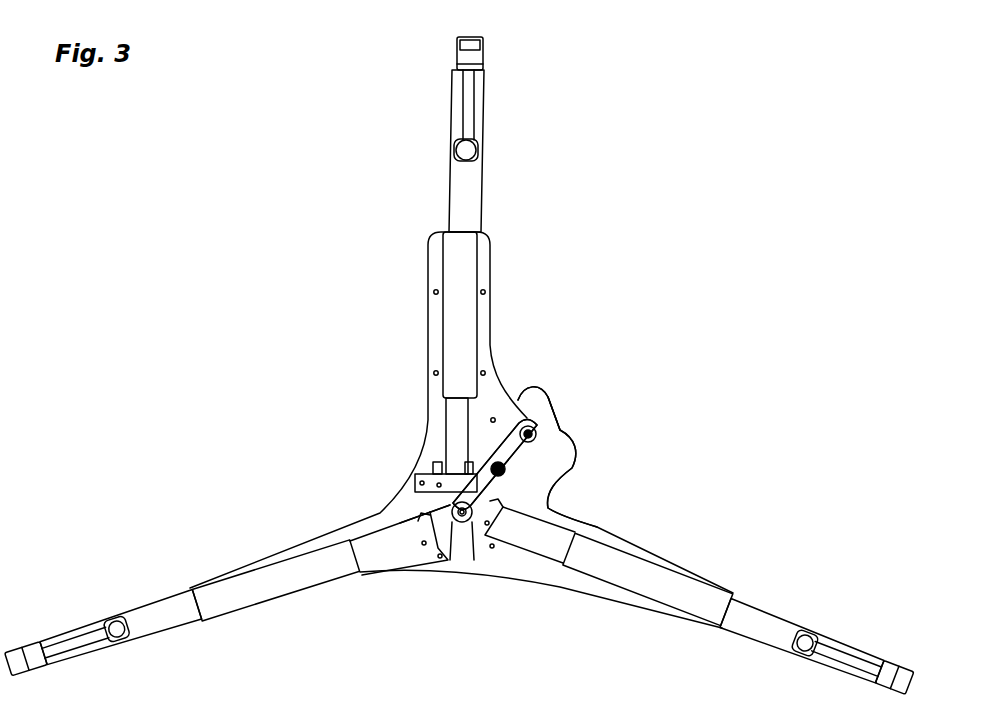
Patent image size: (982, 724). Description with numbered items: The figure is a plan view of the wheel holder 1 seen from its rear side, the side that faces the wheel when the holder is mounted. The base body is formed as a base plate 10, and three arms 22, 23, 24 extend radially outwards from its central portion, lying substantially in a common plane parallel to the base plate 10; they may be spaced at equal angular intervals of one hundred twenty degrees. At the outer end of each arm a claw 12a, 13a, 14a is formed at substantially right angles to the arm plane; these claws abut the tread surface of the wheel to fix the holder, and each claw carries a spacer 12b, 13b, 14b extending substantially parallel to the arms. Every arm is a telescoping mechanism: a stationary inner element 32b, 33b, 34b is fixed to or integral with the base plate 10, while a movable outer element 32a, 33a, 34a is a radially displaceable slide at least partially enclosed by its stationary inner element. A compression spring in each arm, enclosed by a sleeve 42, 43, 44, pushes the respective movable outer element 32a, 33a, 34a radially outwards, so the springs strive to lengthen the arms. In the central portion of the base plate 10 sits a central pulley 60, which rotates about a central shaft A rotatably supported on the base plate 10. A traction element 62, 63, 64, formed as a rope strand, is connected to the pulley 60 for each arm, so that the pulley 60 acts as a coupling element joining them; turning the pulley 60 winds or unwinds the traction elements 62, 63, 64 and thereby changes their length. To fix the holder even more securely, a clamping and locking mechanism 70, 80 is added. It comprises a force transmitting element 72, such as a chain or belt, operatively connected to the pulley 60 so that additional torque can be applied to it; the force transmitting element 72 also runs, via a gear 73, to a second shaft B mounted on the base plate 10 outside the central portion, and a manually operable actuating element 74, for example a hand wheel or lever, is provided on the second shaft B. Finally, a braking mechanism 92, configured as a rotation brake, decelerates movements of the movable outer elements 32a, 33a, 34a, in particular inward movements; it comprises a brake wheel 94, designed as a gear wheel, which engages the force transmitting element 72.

The wheel holder 1 is at (776, 167).
The base plate 10 is at (486, 326).
The claw 12a is at (492, 58).
The spacer 12b is at (457, 150).
The claw 13a is at (873, 642).
The spacer 13b is at (806, 638).
The claw 14a is at (22, 630).
The spacer 14b is at (115, 625).
The arm 22 is at (508, 158).
The arm 23 is at (766, 595).
The arm 24 is at (160, 582).
The movable outer element 32a is at (468, 188).
The stationary inner element 32b is at (470, 264).
The movable outer element 33a is at (752, 632).
The stationary inner element 33b is at (685, 610).
The movable outer element 34a is at (160, 622).
The stationary inner element 34b is at (275, 590).
The sleeve 42 is at (450, 420).
The sleeve 43 is at (552, 548).
The sleeve 44 is at (380, 556).
The central pulley 60 is at (440, 512).
The traction element 62 is at (450, 523).
The traction element 63 is at (480, 533).
The traction element 64 is at (450, 510).
The clamping and locking mechanism 70 is at (509, 422).
The clamping and locking mechanism 80 is at (513, 423).
The force transmitting element 72 is at (503, 488).
The gear 73 is at (536, 446).
The manually operable actuating element 74 is at (556, 386).
The braking mechanism 92 is at (487, 450).
The brake wheel 94 is at (505, 469).
The central shaft A is at (466, 523).
The second shaft B is at (535, 432).